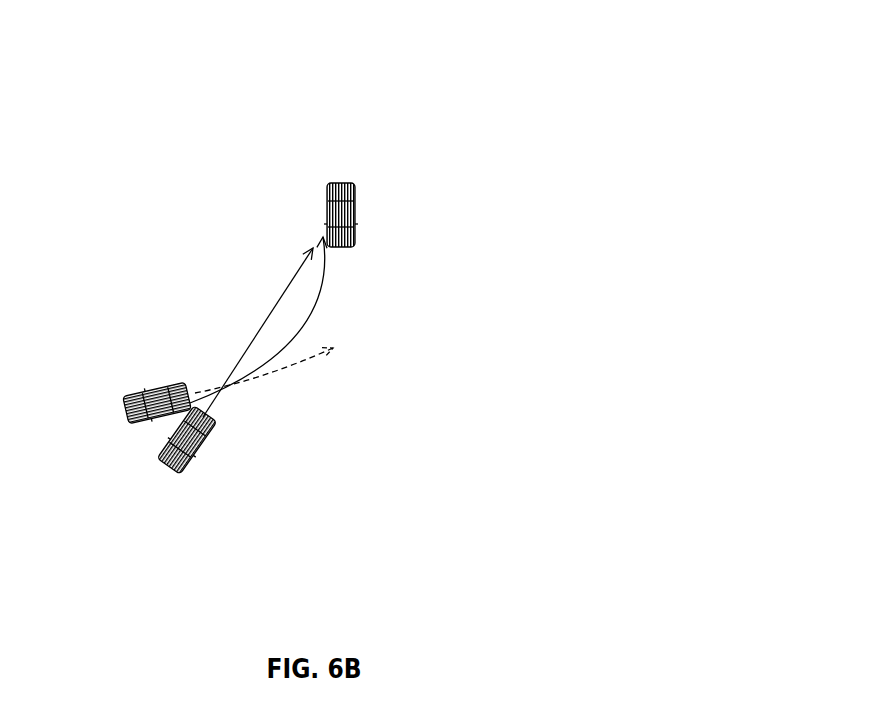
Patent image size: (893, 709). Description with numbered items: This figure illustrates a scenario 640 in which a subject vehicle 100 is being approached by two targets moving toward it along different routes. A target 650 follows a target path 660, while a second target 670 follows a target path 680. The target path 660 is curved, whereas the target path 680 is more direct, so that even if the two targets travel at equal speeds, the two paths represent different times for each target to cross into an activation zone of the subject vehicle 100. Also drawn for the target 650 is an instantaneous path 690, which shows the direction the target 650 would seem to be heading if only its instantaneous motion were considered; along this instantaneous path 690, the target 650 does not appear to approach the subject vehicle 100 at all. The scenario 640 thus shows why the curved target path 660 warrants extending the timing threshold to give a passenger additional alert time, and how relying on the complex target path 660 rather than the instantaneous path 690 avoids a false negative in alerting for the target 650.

The scenario 640 is at (475, 137).
The subject vehicle 100 is at (342, 183).
The target 650 is at (157, 388).
The target 670 is at (200, 448).
The target path 680 is at (281, 302).
The target path 660 is at (323, 303).
The instantaneous path 690 is at (303, 360).